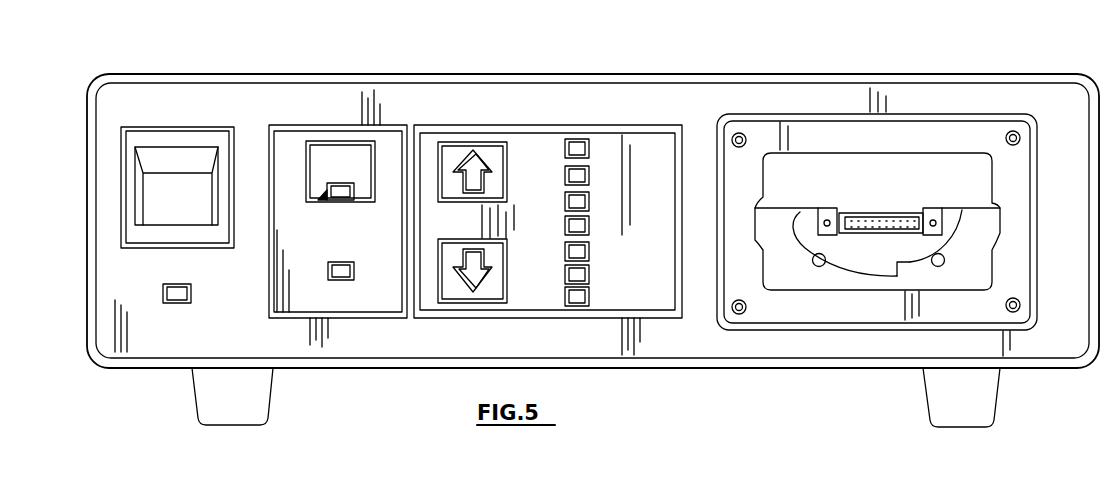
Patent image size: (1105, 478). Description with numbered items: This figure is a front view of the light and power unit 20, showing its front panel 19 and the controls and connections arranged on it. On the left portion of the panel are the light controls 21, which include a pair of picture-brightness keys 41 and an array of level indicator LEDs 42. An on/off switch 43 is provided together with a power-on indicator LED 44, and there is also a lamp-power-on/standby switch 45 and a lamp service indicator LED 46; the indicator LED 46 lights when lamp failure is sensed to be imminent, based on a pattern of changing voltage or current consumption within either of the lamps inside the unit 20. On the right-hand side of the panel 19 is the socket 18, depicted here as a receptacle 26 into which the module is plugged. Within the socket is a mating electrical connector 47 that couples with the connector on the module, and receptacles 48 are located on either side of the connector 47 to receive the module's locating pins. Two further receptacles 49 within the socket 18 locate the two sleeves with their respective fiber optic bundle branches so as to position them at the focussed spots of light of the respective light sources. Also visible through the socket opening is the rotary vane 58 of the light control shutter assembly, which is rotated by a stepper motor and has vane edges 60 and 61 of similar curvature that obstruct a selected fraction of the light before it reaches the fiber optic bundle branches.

The socket 18 is at (785, 290).
The front panel 19 is at (660, 345).
The unit 20 is at (268, 404).
The light controls 21 is at (388, 126).
The receptacle 26 is at (758, 243).
The picture-brightness keys 41 is at (510, 294).
The indicator lights 42 is at (594, 277).
The on/off switch 43 is at (234, 233).
The power-on indicator LED 44 is at (193, 300).
The lamp-power-on/standby switch 45 is at (322, 199).
The lamp service indicator LED 46 is at (356, 273).
The mating electrical connector 47 is at (878, 215).
The receptacles 48 is at (827, 222).
The receptacles 49 is at (819, 267).
The rotary vane 58 is at (817, 240).
The vane edge 60 is at (852, 268).
The vane edge 61 is at (922, 263).